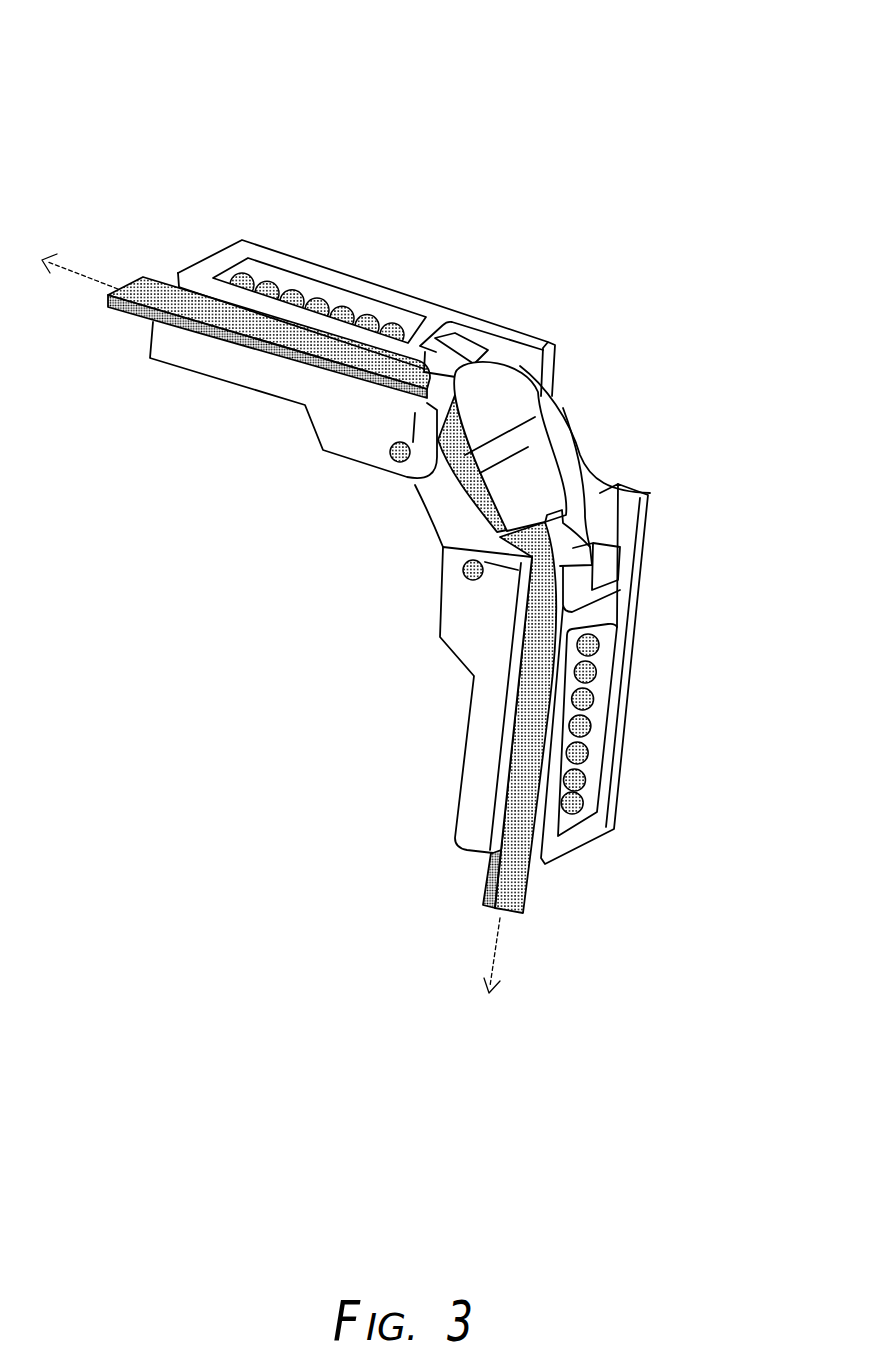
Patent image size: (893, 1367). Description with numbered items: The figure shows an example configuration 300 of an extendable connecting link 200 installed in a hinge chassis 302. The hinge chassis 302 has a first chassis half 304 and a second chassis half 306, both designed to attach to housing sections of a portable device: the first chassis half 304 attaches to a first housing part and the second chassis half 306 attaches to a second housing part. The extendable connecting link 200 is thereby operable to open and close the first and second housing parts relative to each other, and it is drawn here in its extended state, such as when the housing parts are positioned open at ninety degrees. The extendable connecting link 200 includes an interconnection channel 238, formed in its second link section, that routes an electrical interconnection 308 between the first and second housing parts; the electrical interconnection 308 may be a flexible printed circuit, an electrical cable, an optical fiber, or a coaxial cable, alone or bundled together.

The example configuration 300 is at (405, 499).
The hinge chassis 302 is at (371, 296).
The first chassis half 304 is at (325, 262).
The second chassis half 306 is at (648, 595).
The electrical interconnection 308 is at (140, 320).
The extendable connecting link 200 is at (600, 416).
The interconnection channel 238 is at (462, 527).